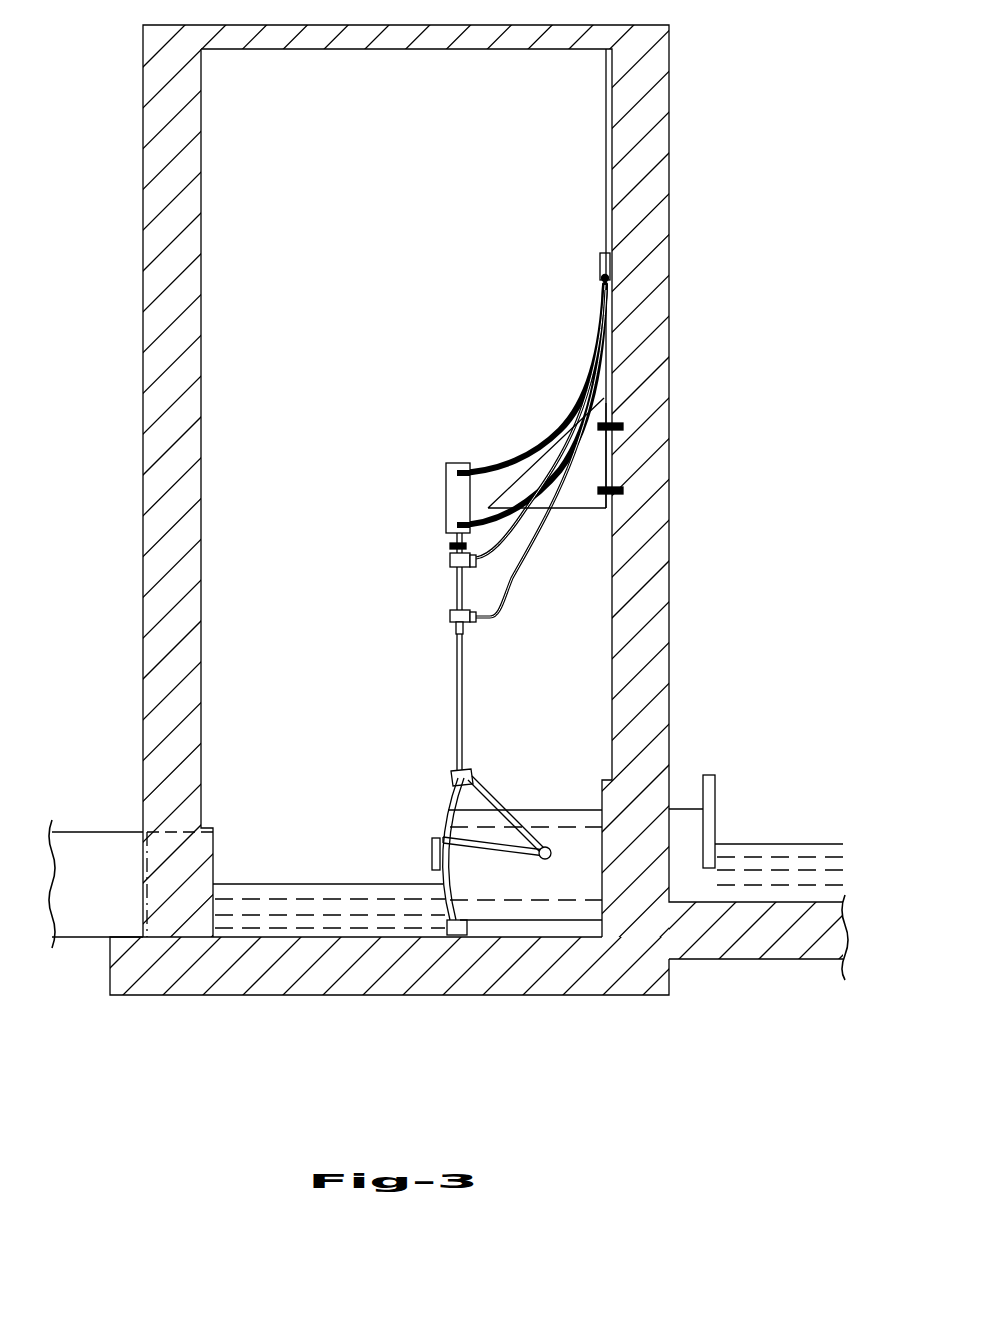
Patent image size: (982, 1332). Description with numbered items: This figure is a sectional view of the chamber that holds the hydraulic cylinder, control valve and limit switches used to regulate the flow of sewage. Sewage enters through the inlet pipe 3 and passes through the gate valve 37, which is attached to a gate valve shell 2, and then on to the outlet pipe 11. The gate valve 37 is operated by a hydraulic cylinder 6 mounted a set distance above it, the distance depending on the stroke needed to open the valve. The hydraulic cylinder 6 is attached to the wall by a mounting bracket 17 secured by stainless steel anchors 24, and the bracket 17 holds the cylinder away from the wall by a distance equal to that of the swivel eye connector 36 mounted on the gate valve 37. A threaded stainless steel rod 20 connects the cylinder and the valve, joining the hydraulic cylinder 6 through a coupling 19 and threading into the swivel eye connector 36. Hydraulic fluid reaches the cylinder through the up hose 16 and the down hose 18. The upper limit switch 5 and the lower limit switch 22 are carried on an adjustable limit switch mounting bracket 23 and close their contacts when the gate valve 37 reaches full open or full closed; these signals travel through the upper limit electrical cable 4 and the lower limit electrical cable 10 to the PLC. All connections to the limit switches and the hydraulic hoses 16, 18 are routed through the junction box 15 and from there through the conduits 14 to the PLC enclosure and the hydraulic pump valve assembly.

The gate valve shell 2 is at (563, 815).
The inlet pipe 3 is at (710, 790).
The upper limit switch electrical cable 4 is at (493, 563).
The upper limit switch 5 is at (448, 562).
The hydraulic cylinder 6 is at (447, 488).
The lower limit switch electrical cable 10 is at (528, 547).
The outlet pipe 11 is at (120, 830).
The conduits 14 is at (606, 215).
The junction box 15 is at (598, 257).
The hydraulic hose up 16 is at (480, 470).
The hydraulic cylinder mounting bracket 17 is at (585, 514).
The hydraulic hose down 18 is at (448, 518).
The coupling 19 is at (450, 545).
The threaded stainless steel rod 20 is at (457, 688).
The lower limit switch 22 is at (449, 617).
The limit switch mounting bracket 23 is at (462, 622).
The stainless steel anchors 24 is at (627, 430).
The swivel eye connector 36 is at (457, 777).
The gate valve 37 is at (440, 832).